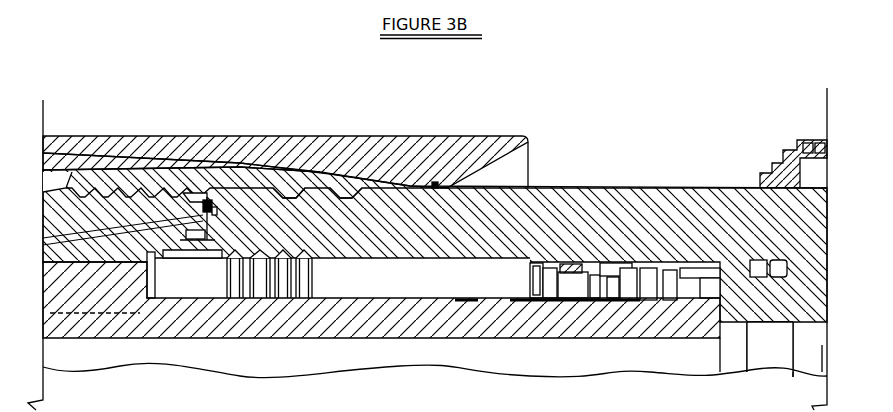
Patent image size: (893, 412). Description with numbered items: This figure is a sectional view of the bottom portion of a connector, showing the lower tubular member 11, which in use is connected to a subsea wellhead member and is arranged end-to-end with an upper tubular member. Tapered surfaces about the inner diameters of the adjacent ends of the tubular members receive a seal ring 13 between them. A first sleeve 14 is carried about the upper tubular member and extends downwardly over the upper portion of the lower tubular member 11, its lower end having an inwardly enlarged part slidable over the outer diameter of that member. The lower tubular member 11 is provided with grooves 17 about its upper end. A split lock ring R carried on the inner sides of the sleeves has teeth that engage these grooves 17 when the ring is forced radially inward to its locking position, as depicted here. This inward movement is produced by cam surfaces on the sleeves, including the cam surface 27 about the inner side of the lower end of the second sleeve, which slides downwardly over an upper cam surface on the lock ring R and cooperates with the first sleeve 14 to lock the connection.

The lower tubular member 11 is at (553, 188).
The seal ring 13 is at (207, 202).
The first sleeve 14 is at (441, 138).
The grooves 17 is at (323, 172).
The cam surface 27 is at (125, 152).
The split lock ring R is at (182, 163).